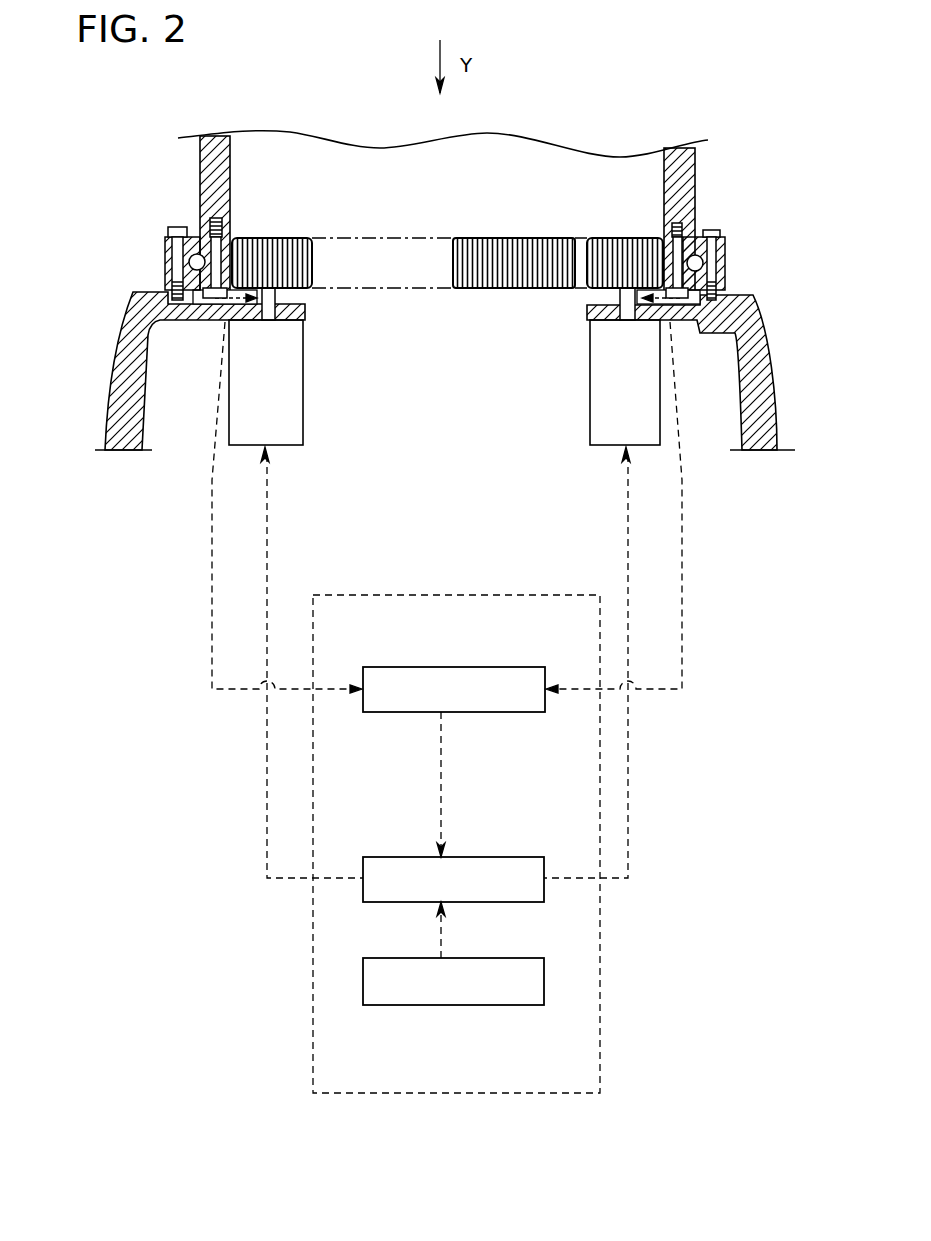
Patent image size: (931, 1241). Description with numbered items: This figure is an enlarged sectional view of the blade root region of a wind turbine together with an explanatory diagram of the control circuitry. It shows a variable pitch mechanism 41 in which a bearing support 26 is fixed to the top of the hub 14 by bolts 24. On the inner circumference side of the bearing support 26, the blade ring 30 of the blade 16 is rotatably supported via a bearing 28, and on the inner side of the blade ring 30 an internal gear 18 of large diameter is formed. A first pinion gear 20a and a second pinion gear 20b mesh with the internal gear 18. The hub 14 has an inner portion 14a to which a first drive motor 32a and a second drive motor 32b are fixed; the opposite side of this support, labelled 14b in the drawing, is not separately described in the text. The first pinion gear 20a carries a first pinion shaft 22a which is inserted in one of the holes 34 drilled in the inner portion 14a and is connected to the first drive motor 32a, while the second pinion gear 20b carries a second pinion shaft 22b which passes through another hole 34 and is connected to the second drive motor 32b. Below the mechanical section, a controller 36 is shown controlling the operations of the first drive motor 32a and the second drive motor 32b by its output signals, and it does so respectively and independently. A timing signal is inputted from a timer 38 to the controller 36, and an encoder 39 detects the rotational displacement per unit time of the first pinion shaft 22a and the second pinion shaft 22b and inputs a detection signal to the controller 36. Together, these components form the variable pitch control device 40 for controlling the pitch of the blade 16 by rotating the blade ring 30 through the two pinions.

The hub 14 is at (113, 352).
The inner portion 14a is at (297, 325).
The support plate 14b is at (588, 308).
The blade 16 is at (243, 146).
The internal gear 18 is at (465, 252).
The first pinion gear 20a is at (272, 238).
The second pinion gear 20b is at (603, 238).
The first pinion shaft 22a is at (278, 296).
The second pinion shaft 22b is at (618, 296).
The bolts 24 is at (177, 226).
The bearing support 26 is at (726, 248).
The bearing 28 is at (168, 262).
The blade ring 30 is at (168, 237).
The first drive motor 32a is at (287, 378).
The second drive motor 32b is at (598, 405).
The holes 34 is at (268, 308).
The controller 36 is at (532, 903).
The timer 38 is at (455, 1007).
The encoder 39 is at (478, 665).
The variable pitch control device 40 is at (603, 968).
The variable pitch mechanism 41 is at (412, 457).